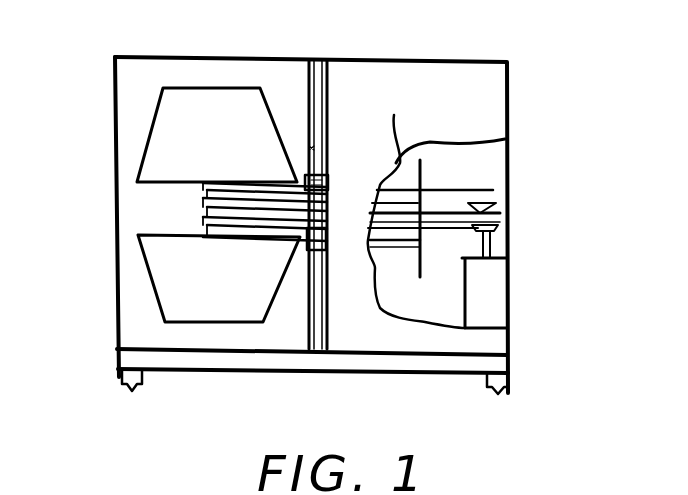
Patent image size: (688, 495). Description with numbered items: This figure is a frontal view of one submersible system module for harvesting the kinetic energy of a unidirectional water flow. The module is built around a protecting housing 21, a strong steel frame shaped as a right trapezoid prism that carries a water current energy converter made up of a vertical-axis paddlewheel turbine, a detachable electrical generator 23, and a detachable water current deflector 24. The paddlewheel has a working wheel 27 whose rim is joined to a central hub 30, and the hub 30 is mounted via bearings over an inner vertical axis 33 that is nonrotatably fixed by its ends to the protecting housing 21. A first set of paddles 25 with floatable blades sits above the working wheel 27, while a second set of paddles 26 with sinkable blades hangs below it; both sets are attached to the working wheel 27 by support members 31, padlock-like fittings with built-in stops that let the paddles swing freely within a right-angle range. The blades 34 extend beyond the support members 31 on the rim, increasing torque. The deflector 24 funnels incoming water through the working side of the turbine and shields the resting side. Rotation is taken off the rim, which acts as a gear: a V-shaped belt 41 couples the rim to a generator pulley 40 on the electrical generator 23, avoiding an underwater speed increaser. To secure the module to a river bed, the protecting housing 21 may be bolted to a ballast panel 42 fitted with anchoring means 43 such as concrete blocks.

The protecting housing 21 is at (469, 62).
The electrical generator 23 is at (492, 284).
The water current deflector 24 is at (483, 346).
The first set of paddles 25 is at (161, 181).
The second set of paddles 26 is at (166, 238).
The working wheel 27 is at (394, 115).
The hub 30 is at (330, 181).
The support members 31 is at (420, 174).
The inner vertical axis 33 is at (307, 88).
The blades 34 is at (179, 205).
The generator pulley 40 is at (497, 206).
The belt 41 is at (498, 228).
The ballast panel 42 is at (496, 370).
The anchoring means 43 is at (500, 378).